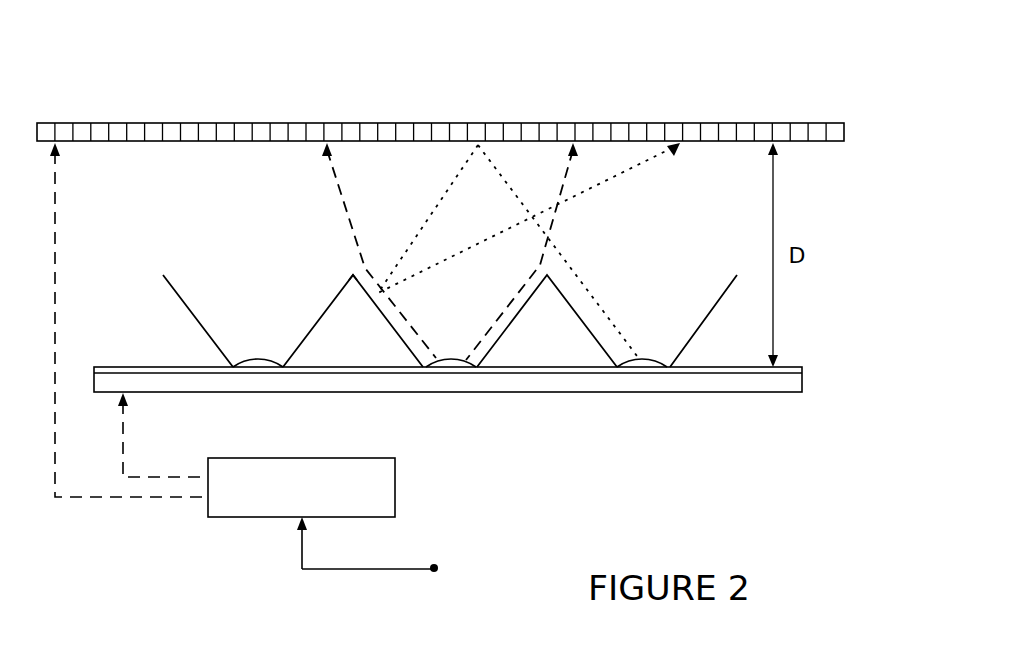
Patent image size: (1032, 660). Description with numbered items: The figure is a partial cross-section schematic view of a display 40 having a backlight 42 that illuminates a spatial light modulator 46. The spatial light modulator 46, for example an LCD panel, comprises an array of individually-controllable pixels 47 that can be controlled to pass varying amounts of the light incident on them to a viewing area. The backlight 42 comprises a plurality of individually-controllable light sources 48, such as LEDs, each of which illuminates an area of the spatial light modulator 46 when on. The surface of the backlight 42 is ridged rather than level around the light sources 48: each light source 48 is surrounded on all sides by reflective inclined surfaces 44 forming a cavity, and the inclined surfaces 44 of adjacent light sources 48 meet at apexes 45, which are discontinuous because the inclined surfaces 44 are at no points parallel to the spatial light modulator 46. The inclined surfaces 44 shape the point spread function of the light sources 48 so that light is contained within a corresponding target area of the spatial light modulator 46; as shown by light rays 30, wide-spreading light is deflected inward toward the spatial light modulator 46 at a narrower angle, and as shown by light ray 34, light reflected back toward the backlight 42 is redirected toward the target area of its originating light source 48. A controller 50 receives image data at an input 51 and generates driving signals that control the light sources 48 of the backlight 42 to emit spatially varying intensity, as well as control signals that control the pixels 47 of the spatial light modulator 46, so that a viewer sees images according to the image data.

The display 40 is at (195, 56).
The spatial light modulator 46 is at (485, 109).
The pixels 47 is at (600, 123).
The light rays 30 is at (333, 172).
The light ray 34 is at (590, 190).
The backlight 42 is at (819, 277).
The inclined surfaces 44 is at (180, 288).
The apexes 45 is at (353, 272).
The light sources 48 is at (451, 368).
The controller 50 is at (395, 488).
The input 51 is at (302, 550).